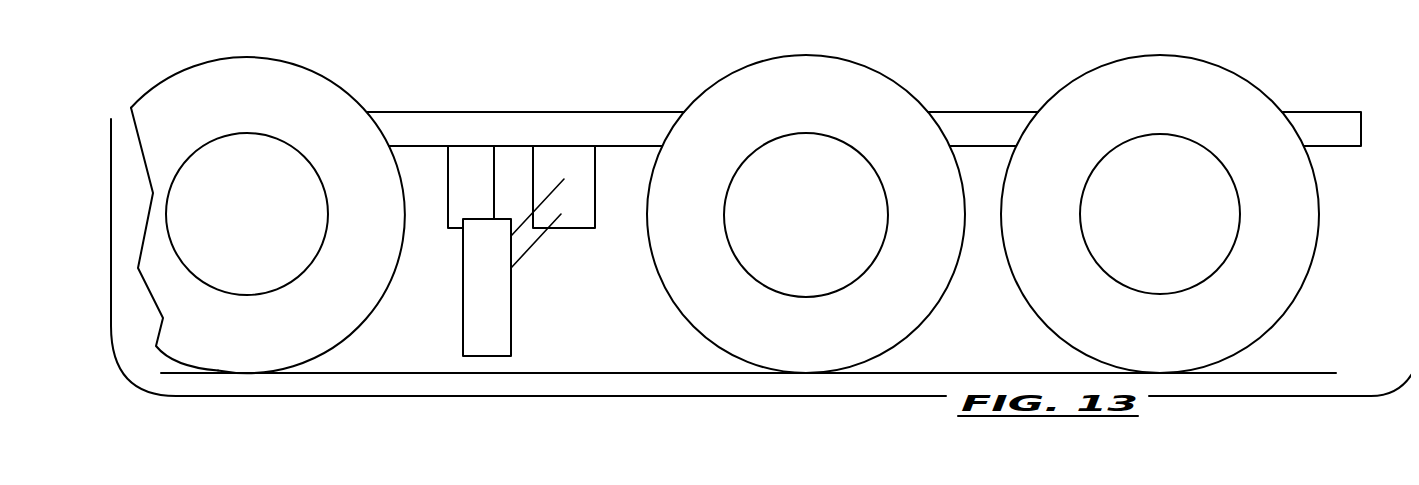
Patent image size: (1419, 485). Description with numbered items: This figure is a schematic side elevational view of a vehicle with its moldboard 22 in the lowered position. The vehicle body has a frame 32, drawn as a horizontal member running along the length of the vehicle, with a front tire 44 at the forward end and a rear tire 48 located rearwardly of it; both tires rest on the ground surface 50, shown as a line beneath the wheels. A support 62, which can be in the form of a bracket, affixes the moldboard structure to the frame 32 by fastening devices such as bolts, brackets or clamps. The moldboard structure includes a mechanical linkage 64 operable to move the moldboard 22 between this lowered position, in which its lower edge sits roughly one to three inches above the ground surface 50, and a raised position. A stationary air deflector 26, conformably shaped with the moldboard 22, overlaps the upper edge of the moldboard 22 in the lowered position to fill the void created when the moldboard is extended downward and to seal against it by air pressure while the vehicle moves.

The moldboard 22 is at (487, 317).
The stationary air deflector 26 is at (478, 202).
The frame 32 is at (968, 125).
The front tire 44 is at (285, 88).
The rear tire 48 is at (850, 88).
The ground surface 50 is at (545, 372).
The support 62 is at (563, 233).
The mechanical linkage 64 is at (535, 253).